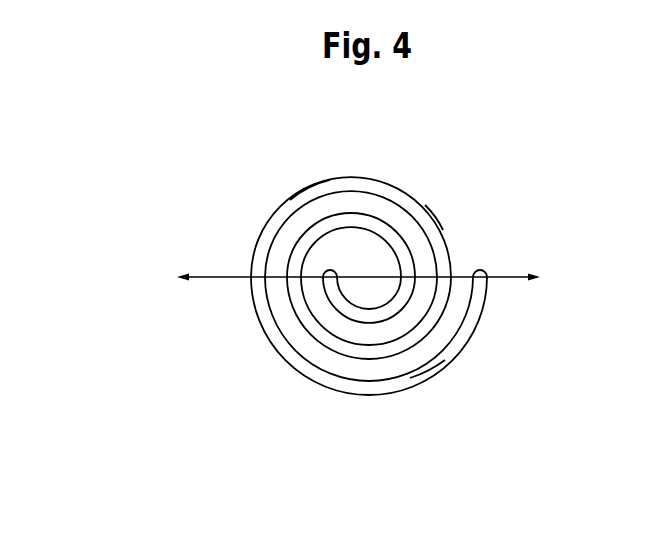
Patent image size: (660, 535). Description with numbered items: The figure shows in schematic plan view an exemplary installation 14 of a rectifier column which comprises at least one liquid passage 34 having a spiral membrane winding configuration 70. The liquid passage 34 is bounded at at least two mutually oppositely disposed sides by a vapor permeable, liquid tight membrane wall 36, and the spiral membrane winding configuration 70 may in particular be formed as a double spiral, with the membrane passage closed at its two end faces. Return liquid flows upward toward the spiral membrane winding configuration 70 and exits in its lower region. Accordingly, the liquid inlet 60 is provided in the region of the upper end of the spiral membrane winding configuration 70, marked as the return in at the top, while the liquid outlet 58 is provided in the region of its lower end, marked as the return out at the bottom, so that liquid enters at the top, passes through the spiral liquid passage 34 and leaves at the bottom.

The installation 14 is at (413, 180).
The liquid passage 34 is at (311, 186).
The membrane wall 36 is at (423, 210).
The liquid outlet 58 is at (213, 278).
The liquid inlet 60 is at (512, 279).
The spiral membrane winding configuration 70 is at (431, 379).